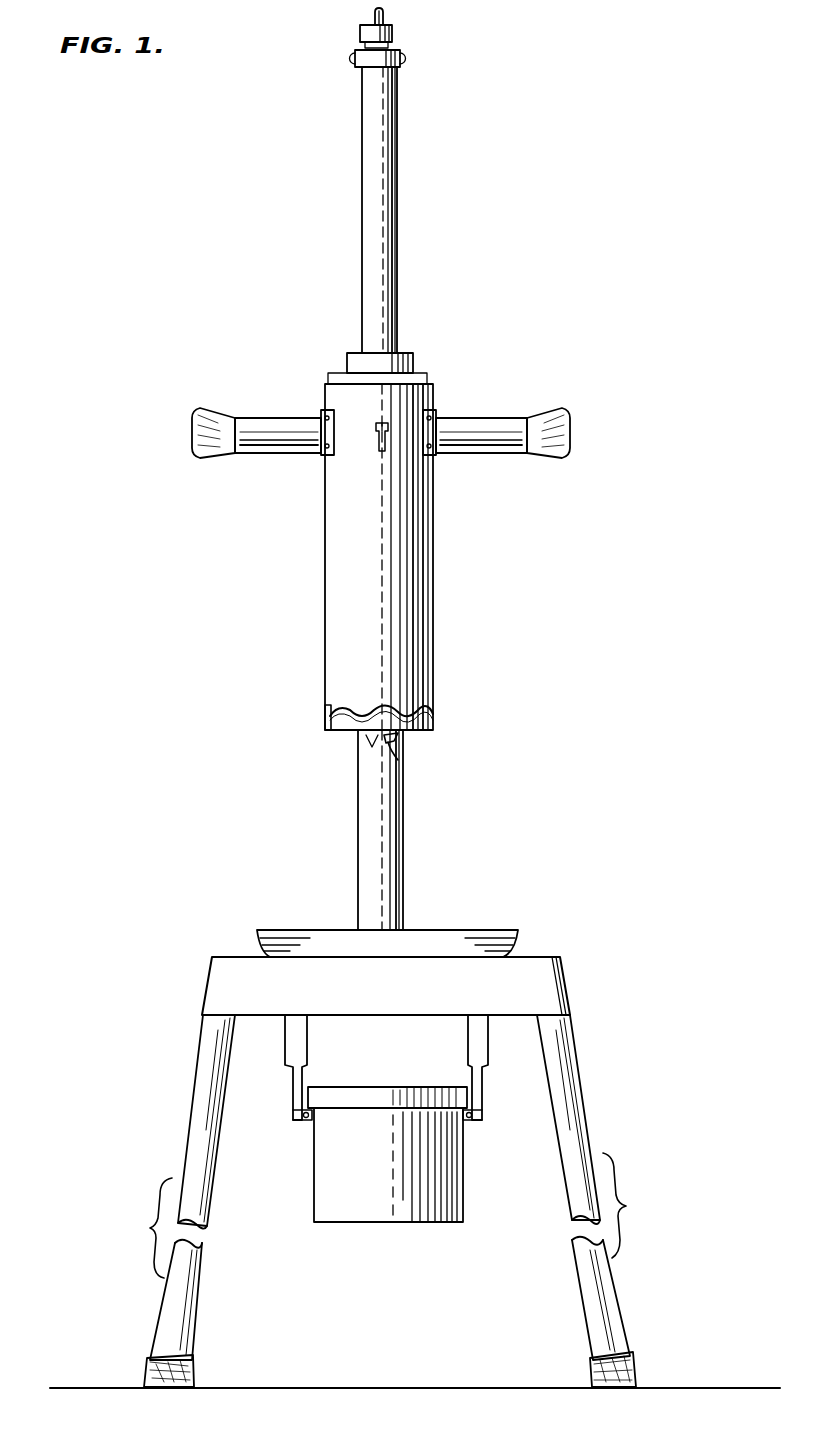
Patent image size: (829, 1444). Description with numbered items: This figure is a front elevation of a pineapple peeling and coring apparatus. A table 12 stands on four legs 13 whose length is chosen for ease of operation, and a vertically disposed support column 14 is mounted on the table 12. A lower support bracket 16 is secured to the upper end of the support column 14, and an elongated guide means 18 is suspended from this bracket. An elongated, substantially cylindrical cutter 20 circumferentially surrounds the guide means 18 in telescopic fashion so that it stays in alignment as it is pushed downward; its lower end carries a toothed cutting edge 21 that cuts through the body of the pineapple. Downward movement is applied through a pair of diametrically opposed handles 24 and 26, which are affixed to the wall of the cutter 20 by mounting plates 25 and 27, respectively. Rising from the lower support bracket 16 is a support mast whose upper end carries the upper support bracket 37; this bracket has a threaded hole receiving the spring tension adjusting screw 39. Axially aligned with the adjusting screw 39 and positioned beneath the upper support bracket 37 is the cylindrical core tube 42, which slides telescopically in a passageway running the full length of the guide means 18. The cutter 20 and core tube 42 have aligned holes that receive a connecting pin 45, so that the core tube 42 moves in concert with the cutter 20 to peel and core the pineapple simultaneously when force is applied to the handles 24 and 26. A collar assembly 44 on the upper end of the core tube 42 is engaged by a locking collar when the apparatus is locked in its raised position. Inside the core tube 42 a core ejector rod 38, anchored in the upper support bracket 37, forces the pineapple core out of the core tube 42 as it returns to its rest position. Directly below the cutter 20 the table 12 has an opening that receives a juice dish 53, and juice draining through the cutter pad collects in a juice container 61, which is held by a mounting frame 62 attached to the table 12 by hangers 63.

The table 12 is at (225, 993).
The legs 13 is at (172, 1315).
The support column 14 is at (404, 862).
The lower support bracket 16 is at (414, 363).
The guide means 18 is at (436, 722).
The cylindrical cutter 20 is at (428, 581).
The toothed cutting edge 21 is at (350, 732).
The handle 24 is at (276, 423).
The mounting plate 25 is at (334, 430).
The handle 26 is at (491, 421).
The mounting plate 27 is at (436, 437).
The upper support bracket 37 is at (362, 36).
The core ejector rod 38 is at (392, 748).
The spring tension adjusting screw 39 is at (385, 11).
The core tube 42 is at (392, 215).
The collar assembly 44 is at (372, 60).
The connecting pin 45 is at (378, 440).
The juice dish 53 is at (479, 934).
The juice container 61 is at (386, 1206).
The mounting frame 62 is at (296, 1110).
The hangers 63 is at (296, 1045).